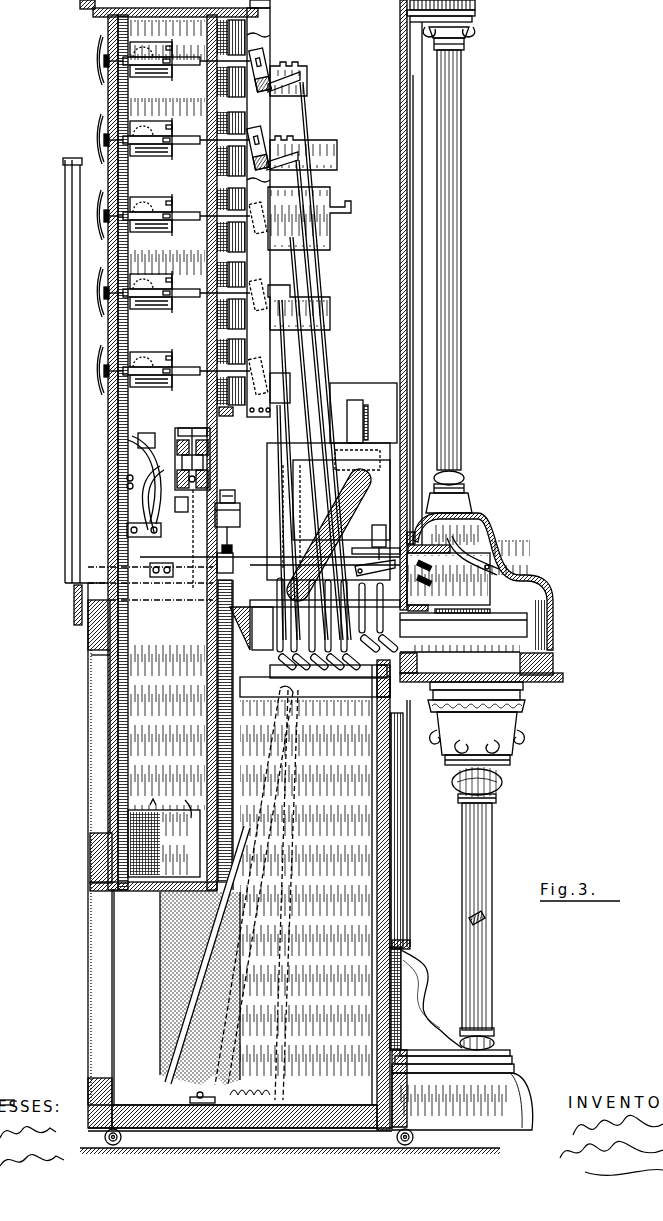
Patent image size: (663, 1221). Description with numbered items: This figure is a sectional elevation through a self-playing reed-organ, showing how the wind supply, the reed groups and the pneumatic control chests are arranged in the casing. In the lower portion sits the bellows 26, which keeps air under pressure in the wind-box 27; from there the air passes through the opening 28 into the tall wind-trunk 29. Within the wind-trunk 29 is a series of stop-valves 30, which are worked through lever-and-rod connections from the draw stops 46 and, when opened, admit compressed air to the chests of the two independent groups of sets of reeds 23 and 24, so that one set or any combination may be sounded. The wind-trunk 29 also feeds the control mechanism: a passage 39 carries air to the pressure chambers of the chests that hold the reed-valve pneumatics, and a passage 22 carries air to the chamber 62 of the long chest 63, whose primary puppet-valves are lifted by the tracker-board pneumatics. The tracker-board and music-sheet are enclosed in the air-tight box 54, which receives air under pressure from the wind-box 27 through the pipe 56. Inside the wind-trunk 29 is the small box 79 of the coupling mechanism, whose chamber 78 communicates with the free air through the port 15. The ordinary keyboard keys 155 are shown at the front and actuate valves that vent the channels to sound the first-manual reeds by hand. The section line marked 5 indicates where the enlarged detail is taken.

The casing panel 5 is at (250, 550).
The port 15 is at (217, 460).
The passage 22 is at (135, 530).
The sets of reeds of the first manual 23 is at (333, 214).
The sets of reeds of the second manual 24 is at (283, 60).
The bellows 26 is at (213, 1026).
The wind-box 27 is at (309, 725).
The opening 28 is at (164, 838).
The wind-trunk 29 is at (138, 342).
The stop-valves 30 is at (148, 397).
The passage 39 is at (138, 438).
The draw stops 46 is at (432, 563).
The air-tight box 54 is at (375, 457).
The pipe 56 is at (370, 487).
The chamber 62 is at (240, 534).
The long chest 63 is at (224, 491).
The chamber 78 is at (183, 462).
The small box 79 is at (175, 448).
The keys 155 is at (520, 625).